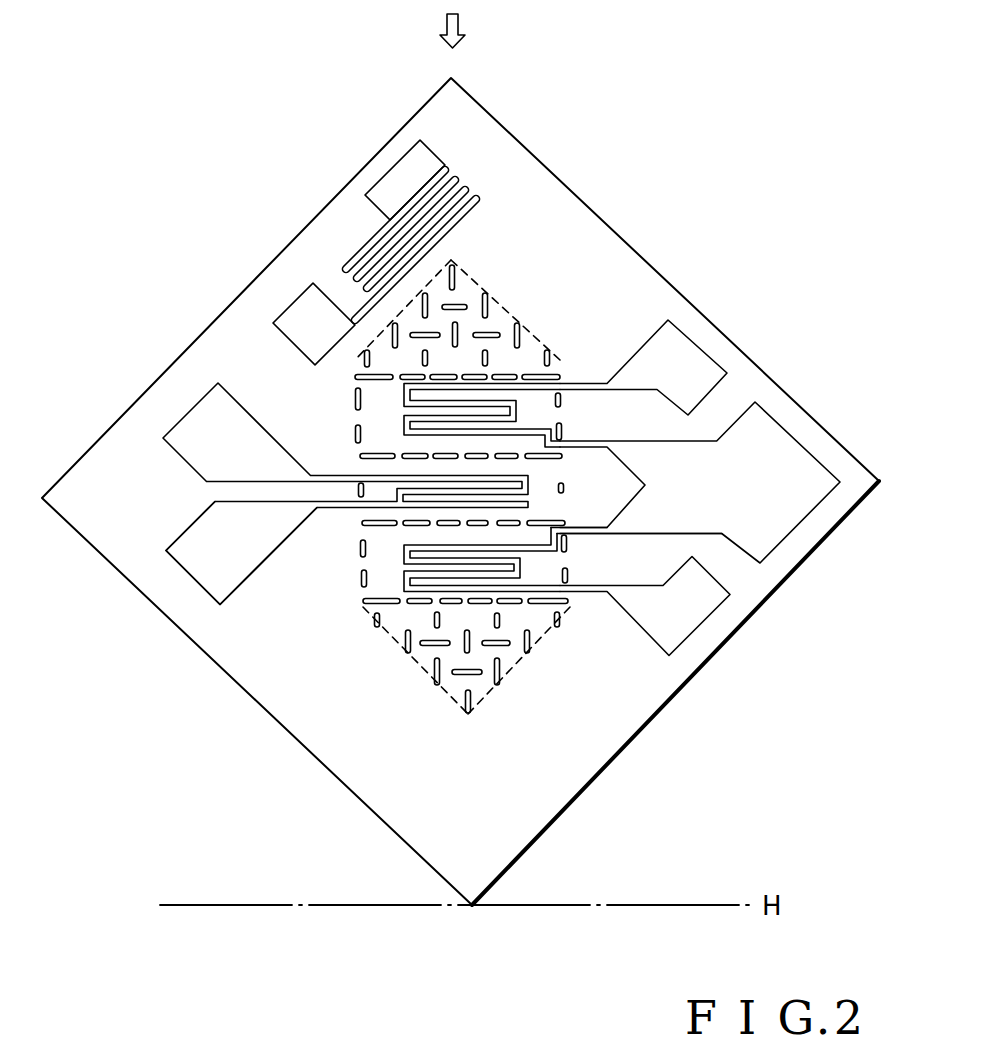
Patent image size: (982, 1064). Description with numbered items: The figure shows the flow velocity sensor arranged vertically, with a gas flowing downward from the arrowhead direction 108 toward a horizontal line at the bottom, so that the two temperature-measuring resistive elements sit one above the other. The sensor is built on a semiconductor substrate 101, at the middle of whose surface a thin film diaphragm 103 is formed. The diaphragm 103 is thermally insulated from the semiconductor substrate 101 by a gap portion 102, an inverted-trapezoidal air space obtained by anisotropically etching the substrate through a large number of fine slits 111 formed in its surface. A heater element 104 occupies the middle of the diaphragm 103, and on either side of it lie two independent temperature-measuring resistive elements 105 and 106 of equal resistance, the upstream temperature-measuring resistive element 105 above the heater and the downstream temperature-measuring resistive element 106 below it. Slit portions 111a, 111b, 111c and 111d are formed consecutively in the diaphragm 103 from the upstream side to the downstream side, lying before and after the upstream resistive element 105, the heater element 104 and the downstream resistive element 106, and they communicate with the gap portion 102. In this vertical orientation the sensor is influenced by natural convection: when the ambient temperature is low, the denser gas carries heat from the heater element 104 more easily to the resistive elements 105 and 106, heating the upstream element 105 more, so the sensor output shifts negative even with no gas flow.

The semiconductor substrate 101 is at (602, 216).
The gap portion 102 is at (413, 667).
The thin film diaphragm 103 is at (375, 512).
The heater element 104 is at (400, 491).
The upstream temperature-measuring resistive element 105 is at (517, 402).
The downstream temperature-measuring resistive element 106 is at (520, 574).
The arrowhead direction 108 is at (463, 24).
The slits 111 is at (463, 300).
The slit portion 111a is at (562, 360).
The slit portion 111b is at (558, 465).
The slit portion 111c is at (560, 508).
The slit portion 111d is at (553, 608).